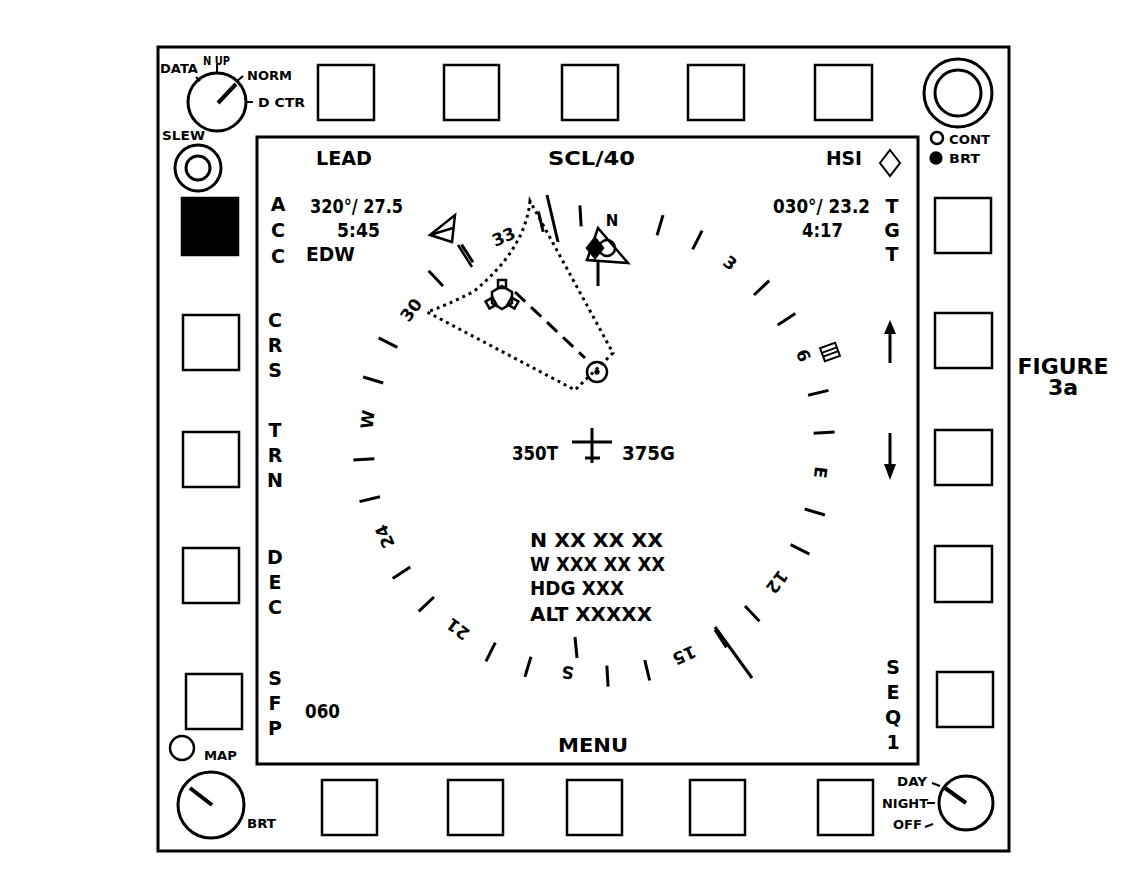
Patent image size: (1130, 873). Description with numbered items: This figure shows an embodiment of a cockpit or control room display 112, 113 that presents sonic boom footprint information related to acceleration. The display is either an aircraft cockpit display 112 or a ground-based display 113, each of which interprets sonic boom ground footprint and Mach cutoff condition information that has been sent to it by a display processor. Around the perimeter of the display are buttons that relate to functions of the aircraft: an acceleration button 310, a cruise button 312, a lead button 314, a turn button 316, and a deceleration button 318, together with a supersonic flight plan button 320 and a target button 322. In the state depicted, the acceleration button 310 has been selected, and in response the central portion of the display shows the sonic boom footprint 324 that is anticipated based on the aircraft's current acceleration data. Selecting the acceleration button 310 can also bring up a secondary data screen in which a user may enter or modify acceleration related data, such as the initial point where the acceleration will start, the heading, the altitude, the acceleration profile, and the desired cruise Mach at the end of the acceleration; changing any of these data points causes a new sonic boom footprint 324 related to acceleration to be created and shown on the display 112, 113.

The aircraft cockpit display 112 is at (1013, 482).
The ground-based display 113 is at (664, 450).
The acceleration button 310 is at (206, 258).
The cruise button 312 is at (207, 373).
The lead button 314 is at (378, 96).
The turn button 316 is at (208, 490).
The deceleration button 318 is at (213, 606).
The supersonic flight plan button 320 is at (183, 690).
The target button 322 is at (961, 256).
The sonic boom footprint 324 is at (504, 358).